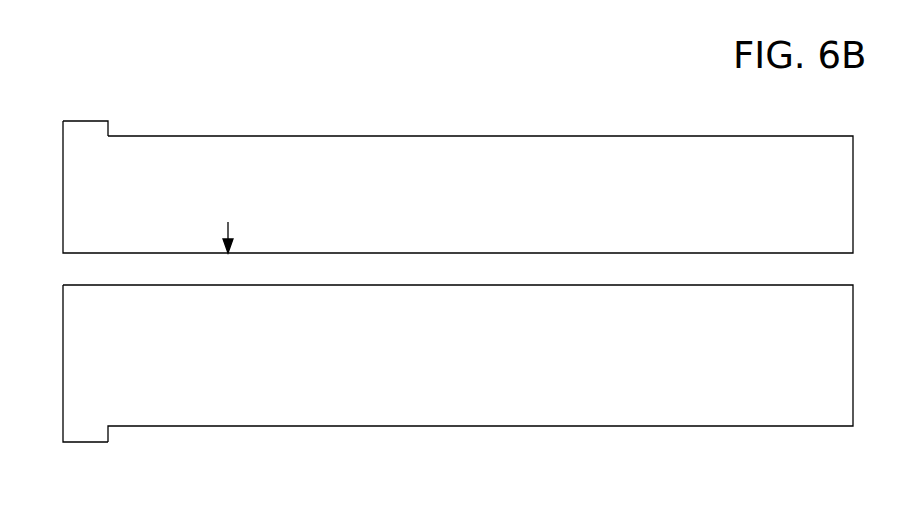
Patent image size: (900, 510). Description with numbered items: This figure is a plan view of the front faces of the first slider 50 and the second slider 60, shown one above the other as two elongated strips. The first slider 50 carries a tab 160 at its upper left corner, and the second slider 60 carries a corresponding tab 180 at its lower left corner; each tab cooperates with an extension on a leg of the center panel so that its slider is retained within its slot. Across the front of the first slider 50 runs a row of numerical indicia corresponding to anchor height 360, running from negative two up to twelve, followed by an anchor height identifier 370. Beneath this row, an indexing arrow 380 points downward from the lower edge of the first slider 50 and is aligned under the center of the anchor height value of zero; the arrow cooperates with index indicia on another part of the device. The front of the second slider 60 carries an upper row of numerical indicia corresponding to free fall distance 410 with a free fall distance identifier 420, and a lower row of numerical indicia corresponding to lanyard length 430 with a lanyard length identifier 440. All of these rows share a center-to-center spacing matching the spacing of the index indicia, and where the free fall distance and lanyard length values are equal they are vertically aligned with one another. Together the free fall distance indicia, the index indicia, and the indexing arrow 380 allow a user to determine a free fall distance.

The first slider 50 is at (633, 134).
The second slider 60 is at (523, 427).
The tab 160 is at (90, 121).
The tab 180 is at (90, 442).
The numerical indicia corresponding to anchor height 360 is at (497, 158).
The anchor height identifier 370 is at (771, 158).
The indexing arrow 380 is at (236, 232).
The numerical indicia corresponding to free fall distance 410 is at (460, 318).
The free fall distance identifier 420 is at (752, 318).
The numerical indicia corresponding to lanyard length 430 is at (300, 378).
The lanyard length identifier 440 is at (742, 396).